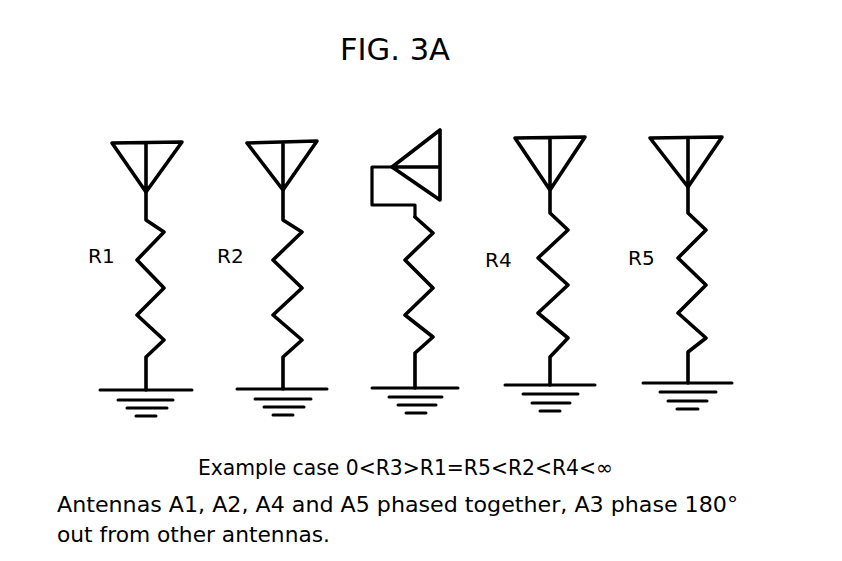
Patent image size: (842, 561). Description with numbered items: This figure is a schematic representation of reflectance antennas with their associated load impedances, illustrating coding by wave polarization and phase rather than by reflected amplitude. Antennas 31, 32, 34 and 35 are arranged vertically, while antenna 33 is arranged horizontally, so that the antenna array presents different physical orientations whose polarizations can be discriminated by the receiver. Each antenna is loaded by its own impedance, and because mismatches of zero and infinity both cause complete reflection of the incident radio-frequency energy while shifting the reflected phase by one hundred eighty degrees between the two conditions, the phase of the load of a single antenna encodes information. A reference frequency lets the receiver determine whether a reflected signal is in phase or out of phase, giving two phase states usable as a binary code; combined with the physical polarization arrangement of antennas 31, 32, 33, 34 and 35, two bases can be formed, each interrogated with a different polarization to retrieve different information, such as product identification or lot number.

The antenna 31 is at (125, 166).
The antenna 32 is at (263, 165).
The antenna 33 is at (440, 178).
The antenna 34 is at (570, 162).
The antenna 35 is at (707, 164).